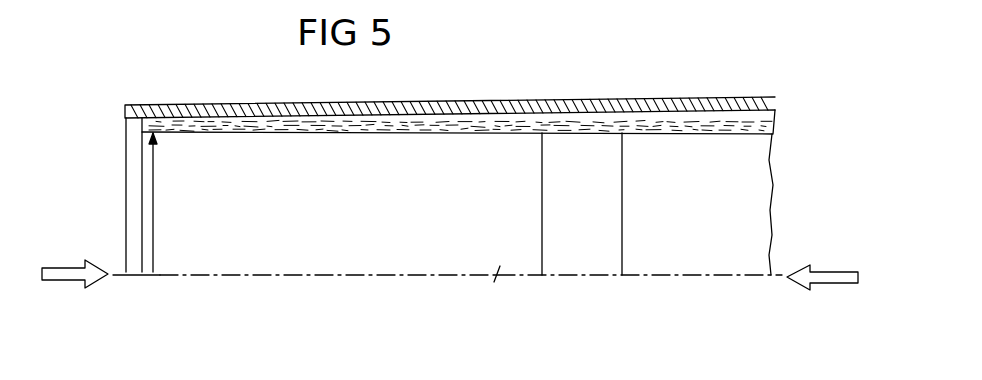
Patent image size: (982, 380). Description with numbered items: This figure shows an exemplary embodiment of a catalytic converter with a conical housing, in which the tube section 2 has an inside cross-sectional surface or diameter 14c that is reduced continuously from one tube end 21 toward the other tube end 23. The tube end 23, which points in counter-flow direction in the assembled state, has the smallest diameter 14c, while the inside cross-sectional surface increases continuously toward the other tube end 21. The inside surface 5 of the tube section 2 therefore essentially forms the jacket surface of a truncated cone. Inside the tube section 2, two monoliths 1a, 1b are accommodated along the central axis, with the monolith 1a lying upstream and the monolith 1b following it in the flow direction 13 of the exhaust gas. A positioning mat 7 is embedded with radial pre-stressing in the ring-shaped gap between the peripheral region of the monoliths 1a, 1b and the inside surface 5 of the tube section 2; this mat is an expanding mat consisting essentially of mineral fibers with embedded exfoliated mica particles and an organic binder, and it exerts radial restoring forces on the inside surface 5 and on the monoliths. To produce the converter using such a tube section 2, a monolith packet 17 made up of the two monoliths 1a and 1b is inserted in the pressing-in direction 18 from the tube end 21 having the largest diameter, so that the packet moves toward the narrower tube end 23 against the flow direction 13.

The tube section 2 is at (479, 103).
The positioning mat 7 is at (652, 122).
The inside surface 5 is at (326, 128).
The tube end 23 is at (123, 240).
The diameter 14c is at (157, 232).
The flow direction 13 is at (64, 268).
The pressing-in direction 18 is at (832, 270).
The monolith 1a is at (355, 240).
The monolith 1b is at (684, 240).
The monolith packet 17 is at (500, 264).
The tube end 21 is at (775, 190).